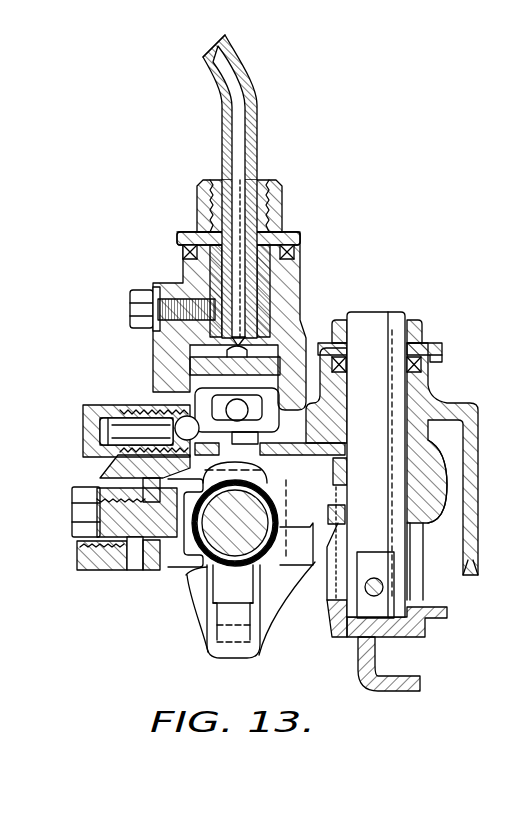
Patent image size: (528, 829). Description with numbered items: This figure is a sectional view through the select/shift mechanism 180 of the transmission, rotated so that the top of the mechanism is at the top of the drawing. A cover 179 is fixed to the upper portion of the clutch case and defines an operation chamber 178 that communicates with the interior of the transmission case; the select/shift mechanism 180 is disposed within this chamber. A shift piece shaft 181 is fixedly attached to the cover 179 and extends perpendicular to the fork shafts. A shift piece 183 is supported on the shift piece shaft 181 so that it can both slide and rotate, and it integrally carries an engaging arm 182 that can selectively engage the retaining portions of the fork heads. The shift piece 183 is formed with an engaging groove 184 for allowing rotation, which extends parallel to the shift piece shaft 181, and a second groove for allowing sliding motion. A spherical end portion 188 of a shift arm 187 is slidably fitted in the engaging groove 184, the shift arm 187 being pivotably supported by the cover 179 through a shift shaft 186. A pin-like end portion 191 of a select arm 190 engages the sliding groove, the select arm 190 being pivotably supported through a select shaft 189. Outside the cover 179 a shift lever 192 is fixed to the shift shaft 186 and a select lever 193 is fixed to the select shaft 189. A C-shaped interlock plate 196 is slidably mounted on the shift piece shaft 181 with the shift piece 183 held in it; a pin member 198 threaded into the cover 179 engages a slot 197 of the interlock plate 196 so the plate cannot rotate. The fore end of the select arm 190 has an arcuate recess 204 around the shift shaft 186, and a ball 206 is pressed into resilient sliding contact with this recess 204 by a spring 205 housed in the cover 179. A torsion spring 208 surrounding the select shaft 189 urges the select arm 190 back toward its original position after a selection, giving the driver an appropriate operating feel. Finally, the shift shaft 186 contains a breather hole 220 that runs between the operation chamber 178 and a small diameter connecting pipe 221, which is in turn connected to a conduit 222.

The operation chamber 178 is at (452, 483).
The cover 179 is at (470, 422).
The select/shift mechanism 180 is at (313, 345).
The shift piece shaft 181 is at (188, 575).
The engaging arm 182 is at (222, 620).
The shift piece 183 is at (278, 553).
The engaging groove for allowing rotation 184 is at (213, 378).
The shift shaft 186 is at (217, 270).
The shift arm 187 is at (197, 363).
The spherical end portion 188 is at (266, 418).
The select shaft 189 is at (383, 528).
The select arm 190 is at (347, 447).
The pin-like end portion 191 is at (270, 455).
The shift lever 192 is at (197, 204).
The select lever 193 is at (423, 323).
The interlock plate 196 is at (150, 572).
The slot 197 is at (128, 548).
The pin member 198 is at (75, 503).
The recess 204 is at (104, 474).
The spring 205 is at (86, 416).
The ball 206 is at (101, 432).
The torsion spring 208 is at (338, 503).
The breather hole 220 is at (241, 221).
The small diameter connecting pipe 221 is at (247, 130).
The conduit 222 is at (246, 71).